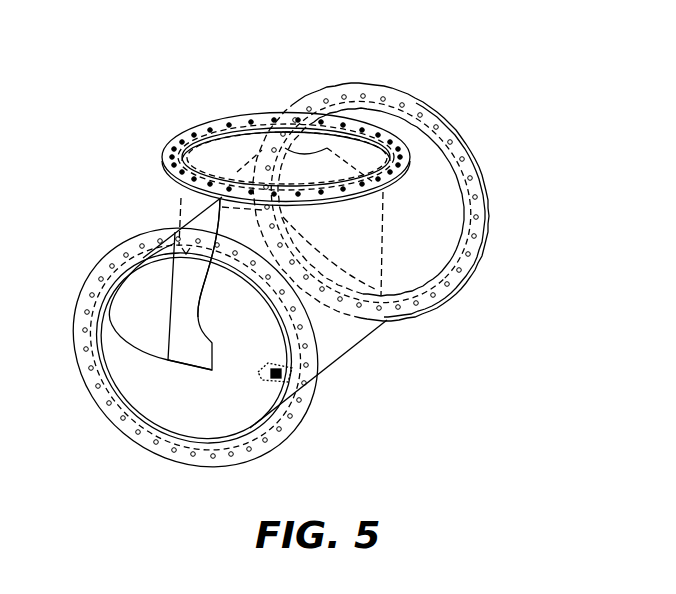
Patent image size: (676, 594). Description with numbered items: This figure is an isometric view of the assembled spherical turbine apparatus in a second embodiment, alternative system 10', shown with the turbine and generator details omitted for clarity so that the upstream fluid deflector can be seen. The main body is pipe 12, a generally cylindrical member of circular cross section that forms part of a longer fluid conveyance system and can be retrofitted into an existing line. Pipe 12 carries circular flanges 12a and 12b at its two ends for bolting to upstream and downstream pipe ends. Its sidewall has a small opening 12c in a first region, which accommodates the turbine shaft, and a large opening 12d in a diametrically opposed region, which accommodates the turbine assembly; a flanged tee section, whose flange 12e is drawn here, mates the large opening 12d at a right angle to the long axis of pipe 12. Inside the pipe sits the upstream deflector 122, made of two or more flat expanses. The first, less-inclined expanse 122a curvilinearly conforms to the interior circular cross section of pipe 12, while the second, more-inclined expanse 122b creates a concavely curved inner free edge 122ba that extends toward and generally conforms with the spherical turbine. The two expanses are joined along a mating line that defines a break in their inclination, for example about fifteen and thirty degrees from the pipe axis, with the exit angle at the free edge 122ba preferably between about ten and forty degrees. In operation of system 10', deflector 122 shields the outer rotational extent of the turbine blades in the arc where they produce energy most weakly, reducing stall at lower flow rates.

The alternative system 10' is at (382, 201).
The pipe 12 is at (362, 347).
The circular flange 12a is at (118, 245).
The circular flange 12b is at (424, 100).
The small opening 12c is at (297, 363).
The large opening 12d is at (285, 148).
The third flange 12e is at (170, 134).
The upstream deflector 122 is at (147, 370).
The first, less-inclined expanse 122a is at (142, 301).
The second, more-inclined expanse 122b is at (185, 363).
The concavely curved inner free edge 122ba is at (223, 310).